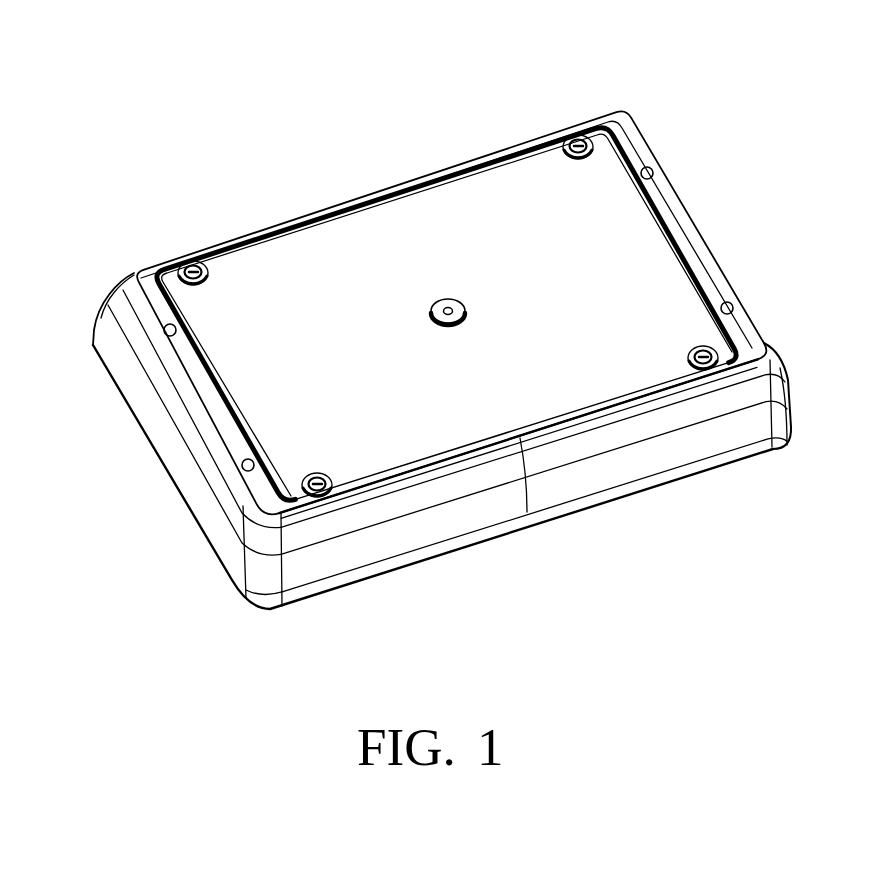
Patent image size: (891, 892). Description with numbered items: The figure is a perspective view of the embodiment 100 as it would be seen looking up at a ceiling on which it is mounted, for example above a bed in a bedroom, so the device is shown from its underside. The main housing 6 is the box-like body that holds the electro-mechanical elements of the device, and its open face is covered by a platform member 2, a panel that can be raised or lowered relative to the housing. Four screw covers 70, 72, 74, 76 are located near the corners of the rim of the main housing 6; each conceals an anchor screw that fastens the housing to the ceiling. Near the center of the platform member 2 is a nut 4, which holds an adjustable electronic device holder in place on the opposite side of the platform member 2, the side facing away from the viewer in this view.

The embodiment 100 is at (590, 30).
The platform member 2 is at (641, 274).
The nut 4 is at (462, 303).
The main housing 6 is at (748, 427).
The screw cover 70 is at (247, 468).
The screw cover 72 is at (165, 335).
The screw cover 74 is at (641, 171).
The screw cover 76 is at (727, 306).